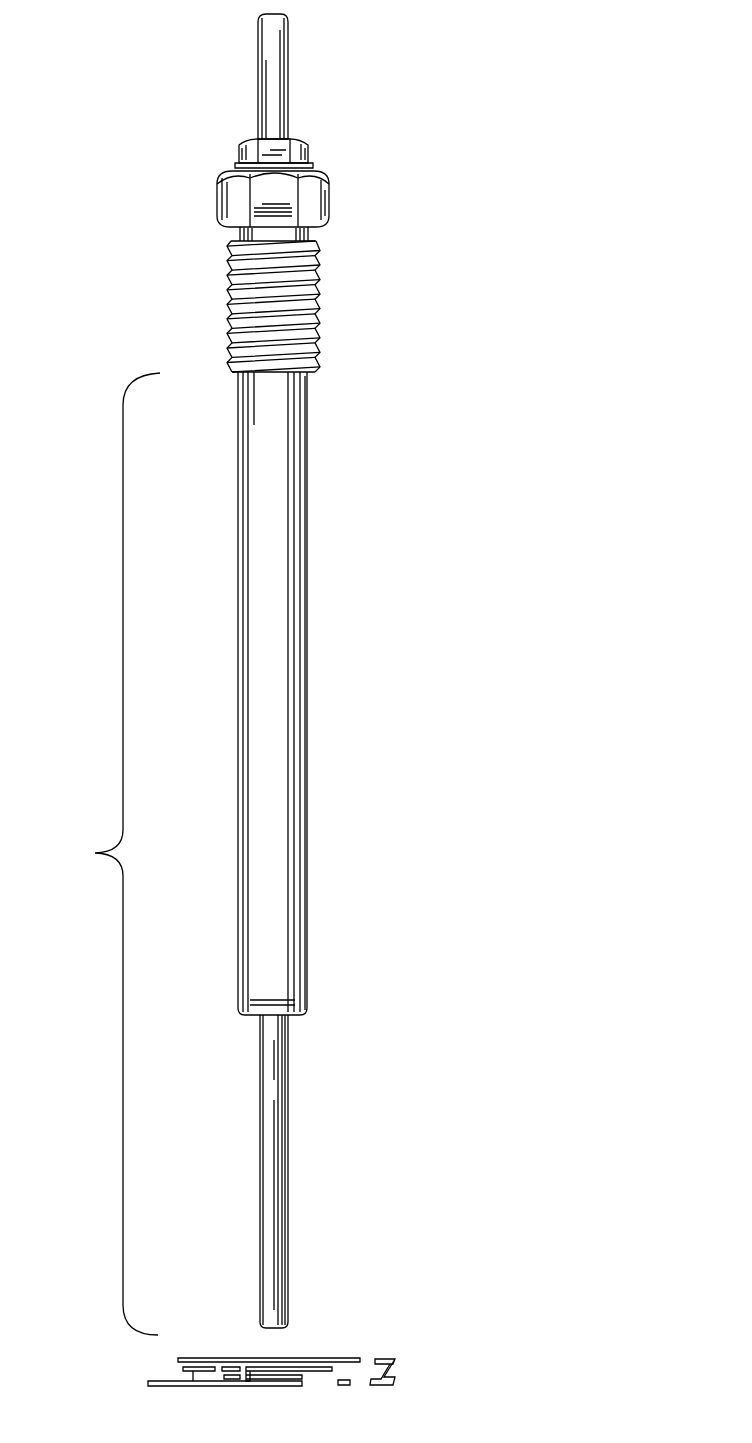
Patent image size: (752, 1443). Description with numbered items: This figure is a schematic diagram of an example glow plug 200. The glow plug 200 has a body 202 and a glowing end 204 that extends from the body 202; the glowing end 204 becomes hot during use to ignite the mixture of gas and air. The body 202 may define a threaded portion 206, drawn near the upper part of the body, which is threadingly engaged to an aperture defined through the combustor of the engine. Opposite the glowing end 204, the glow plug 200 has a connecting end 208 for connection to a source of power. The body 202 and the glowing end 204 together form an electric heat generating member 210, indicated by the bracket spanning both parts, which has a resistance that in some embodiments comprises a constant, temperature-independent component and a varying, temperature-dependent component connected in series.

The glow plug 200 is at (148, 183).
The body 202 is at (293, 637).
The glowing end 204 is at (275, 1169).
The threaded portion 206 is at (297, 286).
The connecting end 208 is at (273, 66).
The electric heat generating member 210 is at (101, 854).